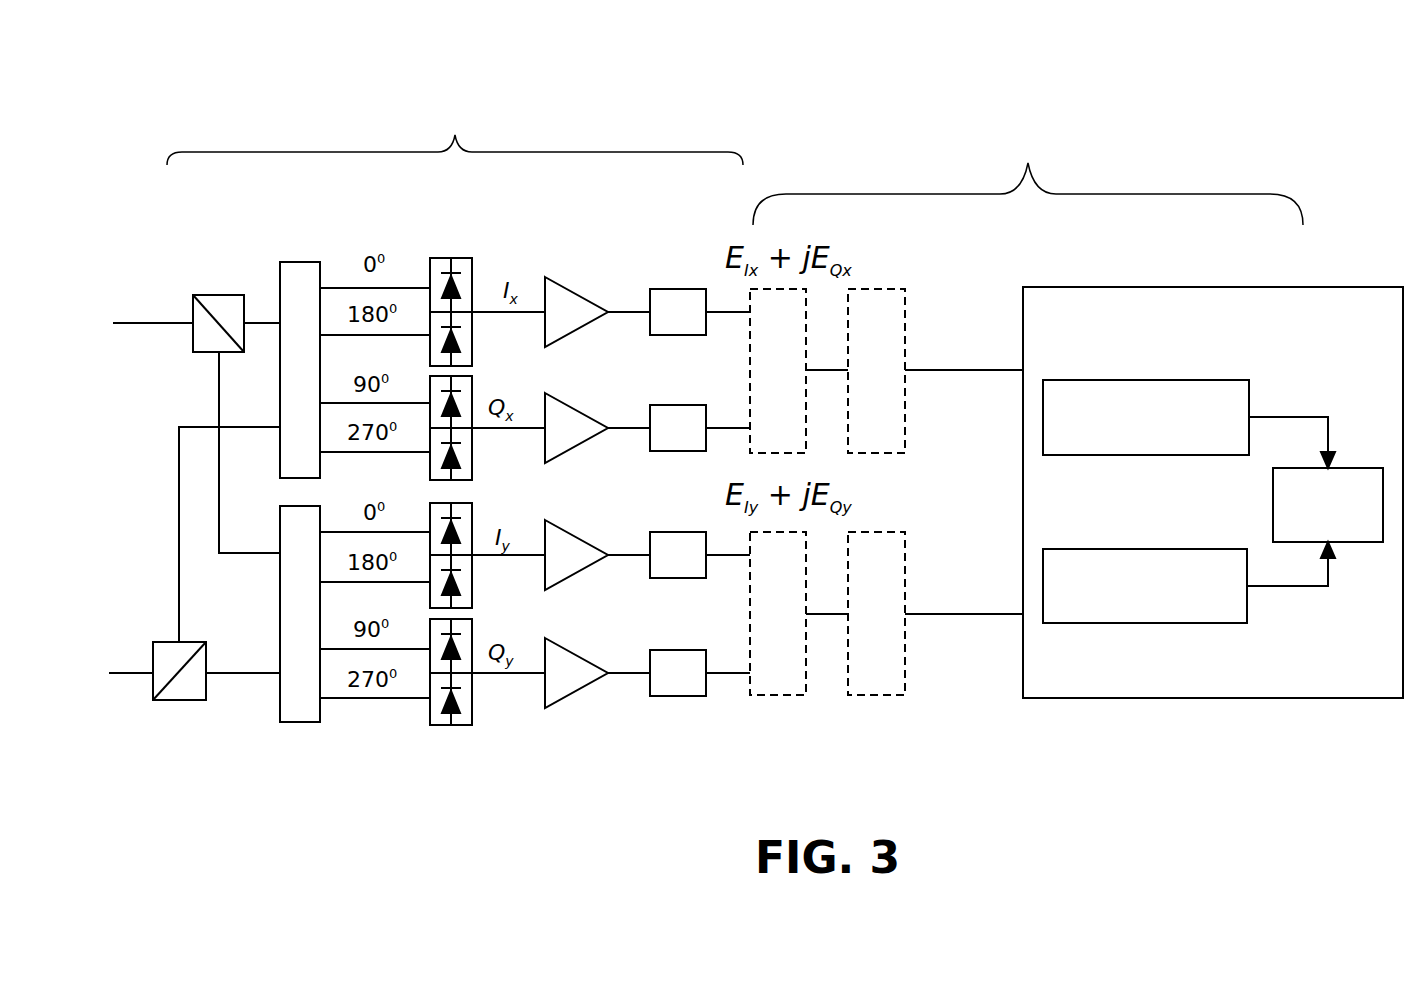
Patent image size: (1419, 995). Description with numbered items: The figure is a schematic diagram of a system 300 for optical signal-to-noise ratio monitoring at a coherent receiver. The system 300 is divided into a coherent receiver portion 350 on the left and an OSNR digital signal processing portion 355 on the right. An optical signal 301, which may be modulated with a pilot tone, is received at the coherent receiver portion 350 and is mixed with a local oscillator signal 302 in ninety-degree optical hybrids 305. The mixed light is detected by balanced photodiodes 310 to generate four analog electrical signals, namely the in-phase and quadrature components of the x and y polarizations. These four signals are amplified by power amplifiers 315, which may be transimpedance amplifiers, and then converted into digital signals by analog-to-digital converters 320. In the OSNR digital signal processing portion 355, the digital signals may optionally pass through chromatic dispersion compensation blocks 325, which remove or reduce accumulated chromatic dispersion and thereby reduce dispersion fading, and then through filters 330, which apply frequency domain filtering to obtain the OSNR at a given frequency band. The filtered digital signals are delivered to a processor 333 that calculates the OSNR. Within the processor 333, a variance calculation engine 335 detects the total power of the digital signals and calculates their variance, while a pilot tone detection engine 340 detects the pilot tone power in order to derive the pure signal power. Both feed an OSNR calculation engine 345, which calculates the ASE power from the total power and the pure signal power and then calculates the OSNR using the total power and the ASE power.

The system 300 is at (1252, 77).
The optical signal 301 is at (119, 311).
The local oscillator signal 302 is at (109, 666).
The 90° optical hybrids 305 is at (298, 262).
The balanced photodiodes 310 is at (452, 259).
The power amplifiers 315 is at (547, 322).
The analog-to-digital converters 320 is at (660, 321).
The chromatic dispersion compensation blocks 325 is at (760, 379).
The filters 330 is at (858, 379).
The processor 333 is at (1188, 699).
The variance calculation engine 335 is at (1128, 427).
The pilot tone detection engine 340 is at (1127, 595).
The OSNR calculation engine 345 is at (1310, 514).
The coherent receiver portion 350 is at (436, 122).
The OSNR digital signal processing portion 355 is at (1007, 152).